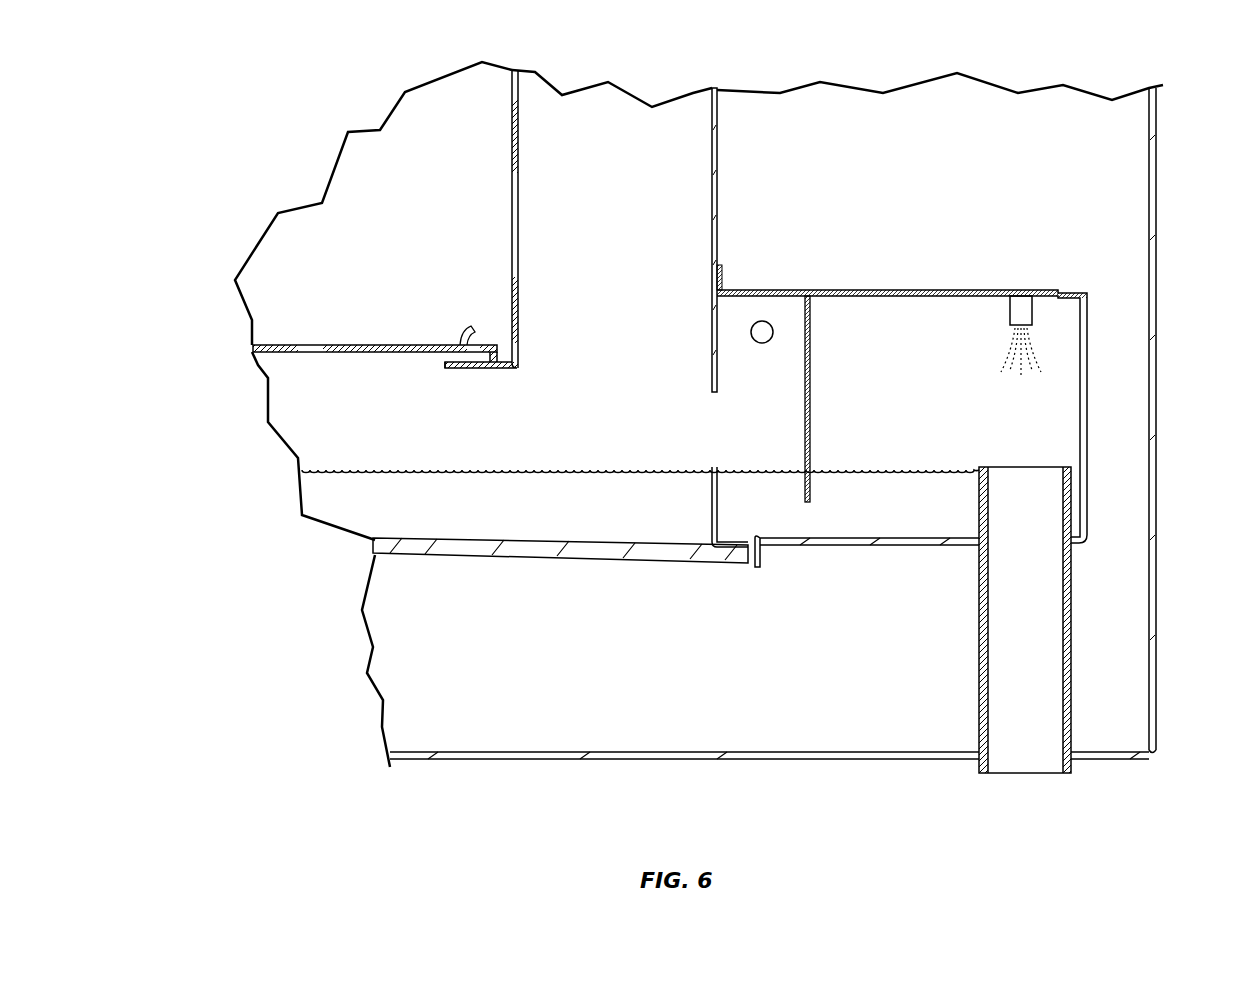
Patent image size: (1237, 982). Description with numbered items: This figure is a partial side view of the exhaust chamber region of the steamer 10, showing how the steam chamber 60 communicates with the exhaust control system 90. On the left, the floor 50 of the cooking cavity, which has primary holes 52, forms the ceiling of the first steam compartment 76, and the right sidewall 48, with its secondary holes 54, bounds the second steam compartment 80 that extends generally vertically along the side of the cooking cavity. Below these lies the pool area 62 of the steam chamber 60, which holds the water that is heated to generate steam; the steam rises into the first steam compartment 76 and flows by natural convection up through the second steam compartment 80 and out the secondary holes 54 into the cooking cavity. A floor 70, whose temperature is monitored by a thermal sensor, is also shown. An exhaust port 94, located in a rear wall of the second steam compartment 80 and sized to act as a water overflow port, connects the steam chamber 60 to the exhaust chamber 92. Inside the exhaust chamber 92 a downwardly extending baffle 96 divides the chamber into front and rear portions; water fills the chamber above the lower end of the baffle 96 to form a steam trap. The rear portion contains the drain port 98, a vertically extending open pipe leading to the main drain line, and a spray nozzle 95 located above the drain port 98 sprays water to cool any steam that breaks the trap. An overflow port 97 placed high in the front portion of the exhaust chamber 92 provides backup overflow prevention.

The steamer 10 is at (218, 177).
The right sidewall 48 is at (512, 300).
The floor 50 is at (395, 343).
The primary holes 52 is at (300, 340).
The secondary holes 54 is at (512, 228).
The steam chamber 60 is at (348, 424).
The pool area 62 is at (410, 515).
The floor 70 is at (590, 560).
The first steam compartment 76 is at (355, 406).
The second steam compartment 80 is at (685, 157).
The exhaust control system 90 is at (979, 252).
The exhaust chamber 92 is at (892, 320).
The exhaust port 94 is at (706, 425).
The spray nozzle 95 is at (1023, 307).
The baffle 96 is at (810, 407).
The overflow port 97 is at (762, 321).
The drain port 98 is at (1033, 490).